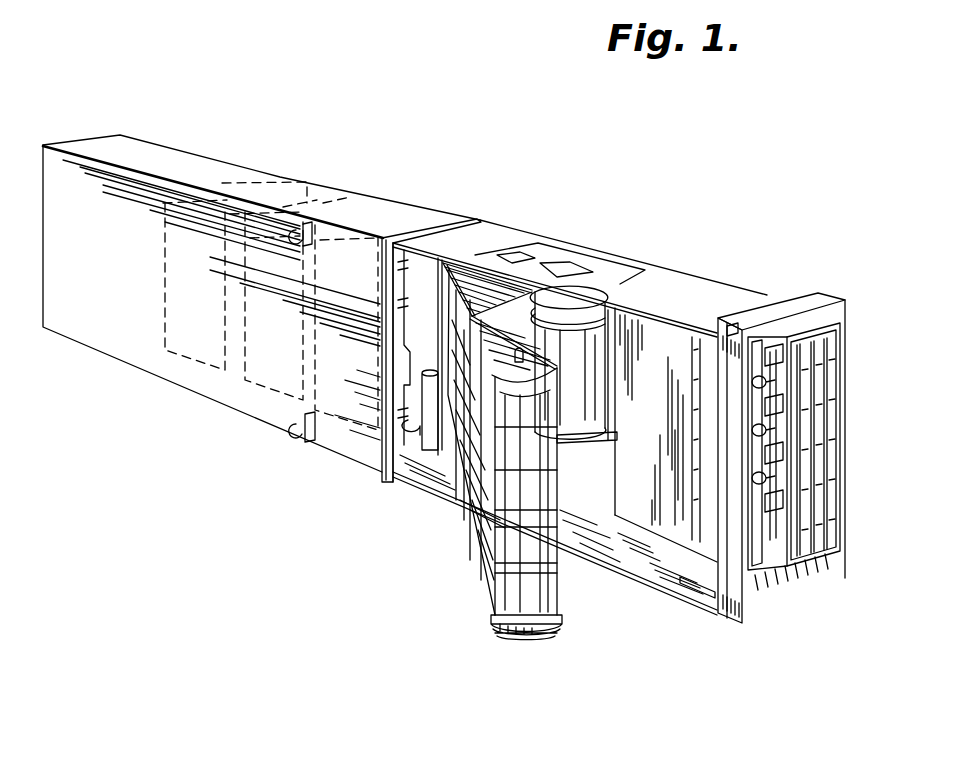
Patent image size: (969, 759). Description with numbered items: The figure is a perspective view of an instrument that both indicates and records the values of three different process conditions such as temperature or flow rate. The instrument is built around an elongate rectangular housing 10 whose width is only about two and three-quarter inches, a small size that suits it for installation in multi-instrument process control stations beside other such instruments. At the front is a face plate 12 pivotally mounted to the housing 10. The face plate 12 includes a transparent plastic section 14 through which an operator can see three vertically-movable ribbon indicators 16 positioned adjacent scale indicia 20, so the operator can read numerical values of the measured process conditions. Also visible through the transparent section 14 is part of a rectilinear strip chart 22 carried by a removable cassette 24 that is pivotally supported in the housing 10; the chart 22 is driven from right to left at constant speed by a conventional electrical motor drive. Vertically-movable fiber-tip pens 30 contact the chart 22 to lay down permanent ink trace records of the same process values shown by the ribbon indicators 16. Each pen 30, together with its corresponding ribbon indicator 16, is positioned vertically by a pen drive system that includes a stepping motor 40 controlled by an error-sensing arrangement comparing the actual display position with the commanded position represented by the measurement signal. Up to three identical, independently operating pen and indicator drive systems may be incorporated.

The housing 10 is at (405, 375).
The face plate 12 is at (846, 372).
The transparent plastic section 14 is at (833, 393).
The ribbon indicators 16 is at (848, 502).
The scale indicia 20 is at (832, 348).
The strip chart 22 is at (507, 586).
The cassette 24 is at (542, 652).
The fiber-tip pens 30 is at (773, 348).
The stepping motor 40 is at (242, 182).